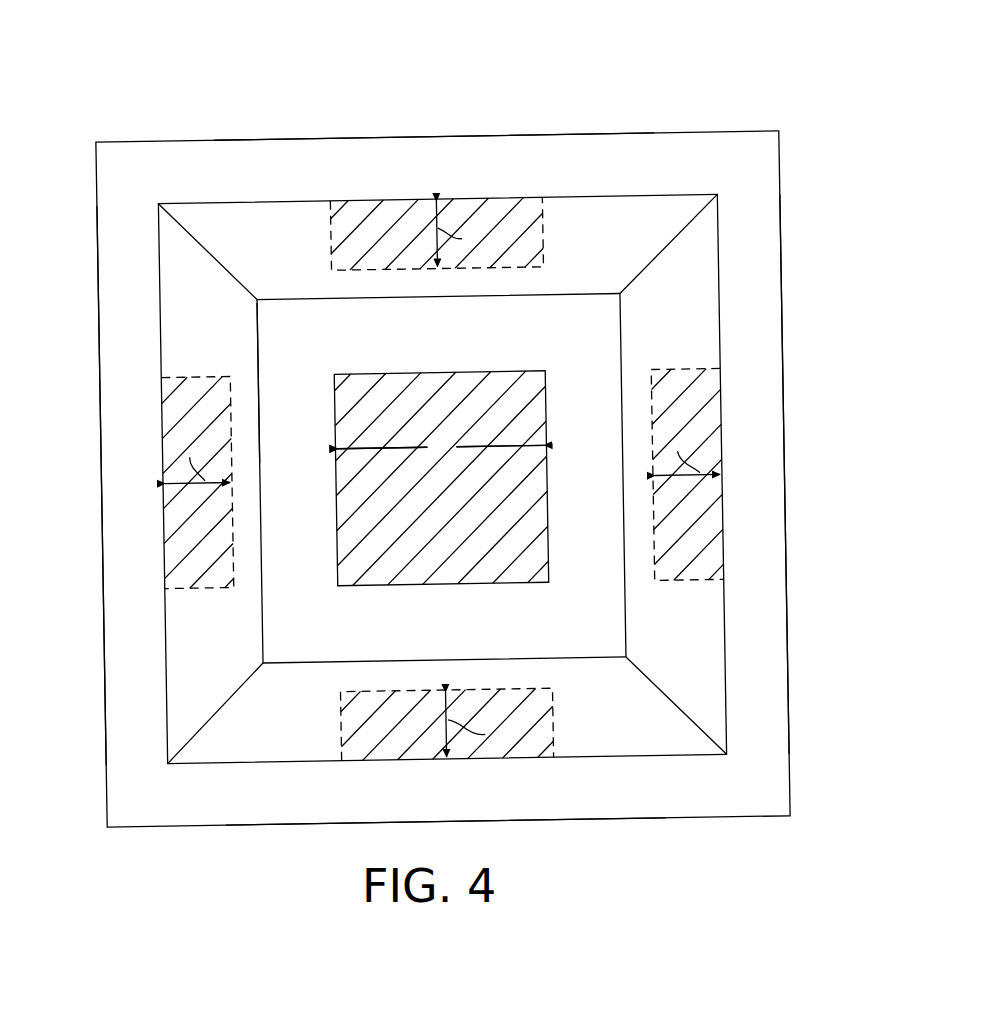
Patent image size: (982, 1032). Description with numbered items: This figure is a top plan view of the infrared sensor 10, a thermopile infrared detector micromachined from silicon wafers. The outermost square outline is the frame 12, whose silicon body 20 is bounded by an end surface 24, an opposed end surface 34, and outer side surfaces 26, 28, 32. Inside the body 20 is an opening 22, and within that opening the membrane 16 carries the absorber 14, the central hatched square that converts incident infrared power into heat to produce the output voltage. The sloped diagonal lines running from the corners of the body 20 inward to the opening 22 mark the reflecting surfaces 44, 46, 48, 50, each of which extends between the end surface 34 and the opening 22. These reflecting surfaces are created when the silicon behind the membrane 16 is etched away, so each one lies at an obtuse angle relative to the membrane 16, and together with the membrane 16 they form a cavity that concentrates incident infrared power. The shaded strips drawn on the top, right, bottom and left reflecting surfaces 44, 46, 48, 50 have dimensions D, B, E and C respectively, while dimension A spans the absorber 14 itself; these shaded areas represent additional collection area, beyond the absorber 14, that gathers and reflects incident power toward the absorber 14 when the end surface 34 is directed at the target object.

The sensor 10 is at (888, 165).
The frame 12 is at (713, 126).
The absorber 14 is at (439, 534).
The membrane 16 is at (452, 347).
The body 20 is at (515, 163).
The opening 22 is at (260, 355).
The end surface 24 is at (665, 818).
The outer side surface 26 is at (268, 133).
The outer side surface 28 is at (778, 238).
The outer side surface 32 is at (102, 497).
The opposed end surface 34 is at (203, 163).
The reflecting surface 44 is at (358, 208).
The reflecting surface 46 is at (703, 530).
The reflecting surface 48 is at (358, 760).
The reflecting surface 50 is at (173, 548).